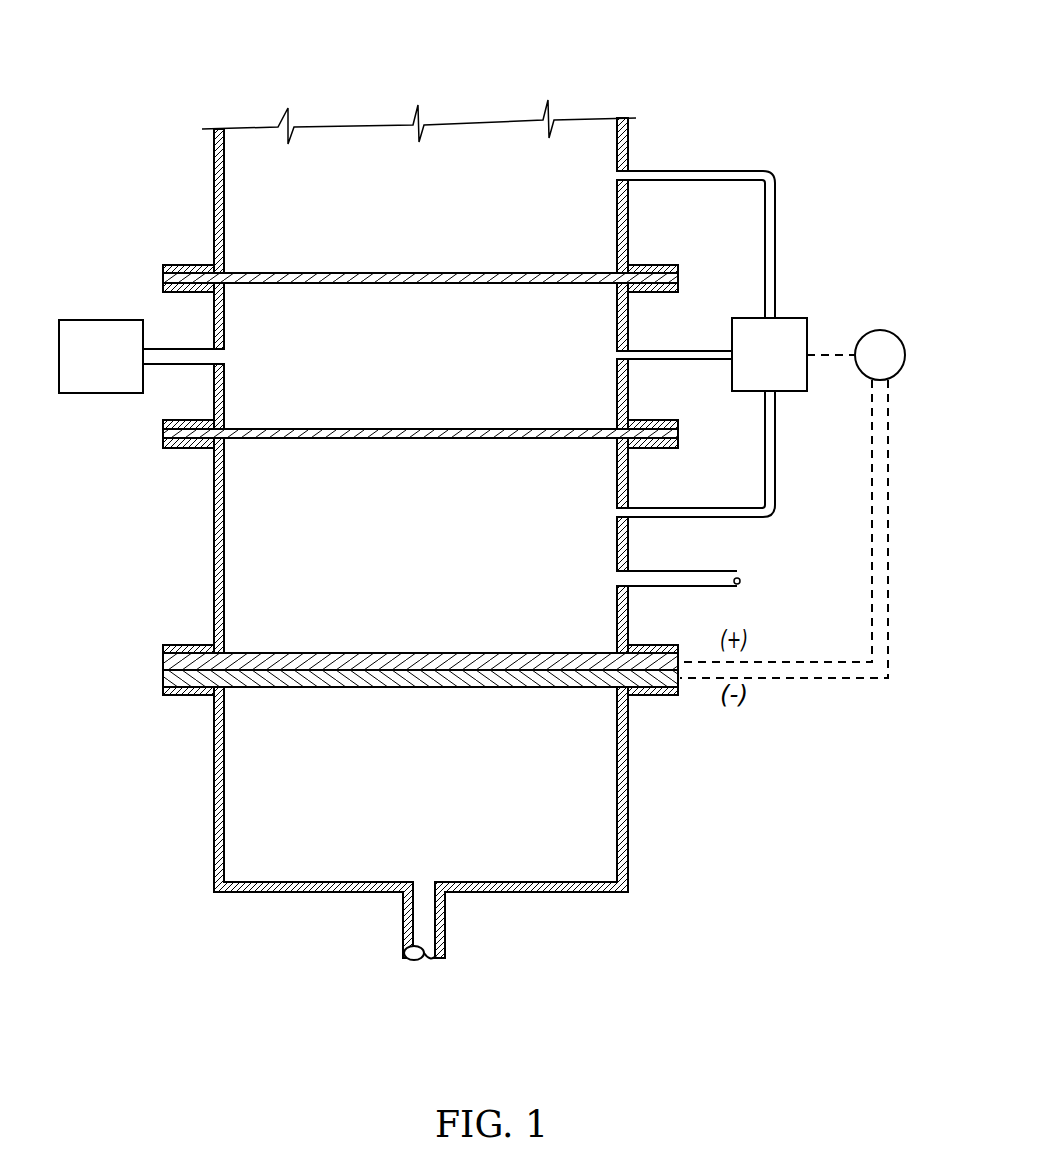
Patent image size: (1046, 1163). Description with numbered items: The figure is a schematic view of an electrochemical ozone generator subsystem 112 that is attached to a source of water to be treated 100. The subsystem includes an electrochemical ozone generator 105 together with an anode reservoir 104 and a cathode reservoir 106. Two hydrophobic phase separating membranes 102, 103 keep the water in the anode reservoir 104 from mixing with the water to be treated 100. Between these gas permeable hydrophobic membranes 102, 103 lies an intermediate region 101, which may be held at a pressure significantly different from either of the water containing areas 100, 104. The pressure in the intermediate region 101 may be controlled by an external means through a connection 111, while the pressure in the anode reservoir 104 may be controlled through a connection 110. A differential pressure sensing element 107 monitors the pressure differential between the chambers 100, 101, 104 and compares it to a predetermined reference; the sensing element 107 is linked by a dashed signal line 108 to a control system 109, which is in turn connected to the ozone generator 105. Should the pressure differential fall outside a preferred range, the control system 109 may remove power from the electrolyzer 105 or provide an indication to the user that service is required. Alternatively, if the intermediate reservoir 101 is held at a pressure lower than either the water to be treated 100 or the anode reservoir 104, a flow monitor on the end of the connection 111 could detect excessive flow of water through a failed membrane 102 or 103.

The source of water to be treated 100 is at (437, 211).
The intermediate region 101 is at (438, 367).
The hydrophobic phase separating membrane 102 is at (352, 283).
The hydrophobic phase separating membrane 103 is at (358, 427).
The anode reservoir 104 is at (438, 562).
The electrochemical ozone generator 105 is at (163, 679).
The cathode reservoir 106 is at (438, 792).
The differential pressure sensing element 107 is at (787, 368).
The control signal line 108 is at (827, 352).
The control system 109 is at (880, 330).
The connection 110 is at (740, 578).
The connection 111 is at (185, 347).
The electrochemical ozone generator subsystem 112 is at (726, 74).